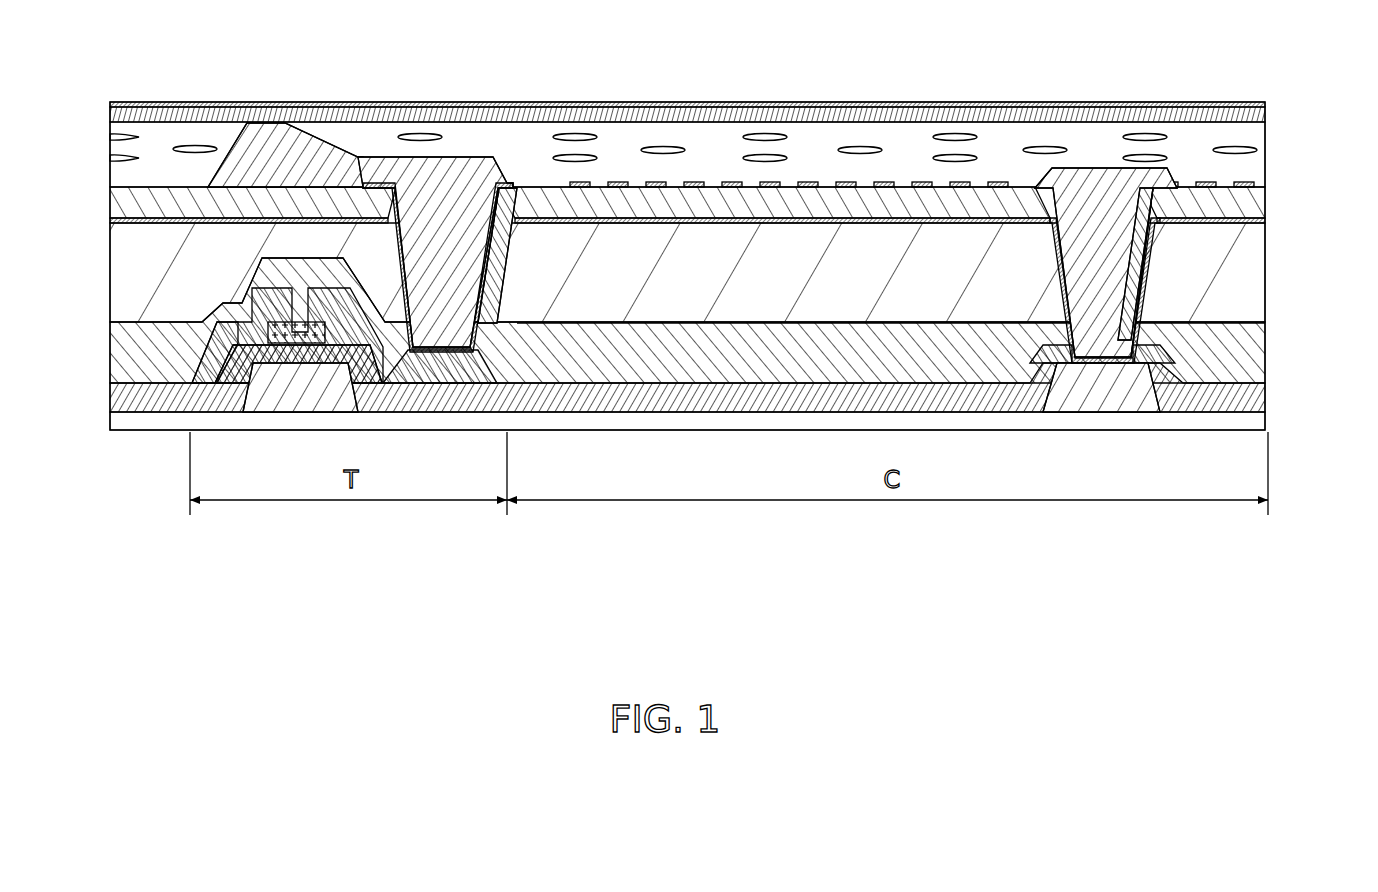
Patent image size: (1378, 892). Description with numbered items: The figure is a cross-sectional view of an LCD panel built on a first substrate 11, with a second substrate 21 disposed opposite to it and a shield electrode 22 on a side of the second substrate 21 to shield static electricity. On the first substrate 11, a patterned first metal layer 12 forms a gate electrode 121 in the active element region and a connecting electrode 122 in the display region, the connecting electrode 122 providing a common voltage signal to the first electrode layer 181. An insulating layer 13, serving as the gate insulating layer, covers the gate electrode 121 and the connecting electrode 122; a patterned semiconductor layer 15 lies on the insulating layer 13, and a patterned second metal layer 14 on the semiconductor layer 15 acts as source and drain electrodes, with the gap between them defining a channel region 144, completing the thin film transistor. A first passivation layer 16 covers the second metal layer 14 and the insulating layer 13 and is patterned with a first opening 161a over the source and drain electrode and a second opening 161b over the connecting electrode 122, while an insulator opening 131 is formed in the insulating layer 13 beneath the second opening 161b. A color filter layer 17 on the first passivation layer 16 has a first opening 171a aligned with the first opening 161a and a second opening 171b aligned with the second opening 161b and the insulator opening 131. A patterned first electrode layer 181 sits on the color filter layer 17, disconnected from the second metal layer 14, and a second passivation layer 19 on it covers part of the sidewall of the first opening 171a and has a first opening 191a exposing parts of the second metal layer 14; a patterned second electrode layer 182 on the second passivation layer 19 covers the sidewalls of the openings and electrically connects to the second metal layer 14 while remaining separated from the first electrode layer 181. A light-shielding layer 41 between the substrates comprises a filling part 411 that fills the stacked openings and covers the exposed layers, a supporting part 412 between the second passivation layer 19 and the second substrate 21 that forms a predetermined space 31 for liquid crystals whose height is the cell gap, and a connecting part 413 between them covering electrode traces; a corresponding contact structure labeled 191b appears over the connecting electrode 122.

The first substrate 11 is at (1257, 424).
The first metal layer 12 is at (701, 489).
The gate electrode 121 is at (298, 372).
The connecting electrode 122 is at (1101, 458).
The insulating layer 13 is at (1262, 393).
The insulator opening 131 is at (1258, 326).
The second metal layer 14 is at (205, 365).
The channel region 144 is at (296, 297).
The semiconductor layer 15 is at (216, 328).
The first passivation layer 16 is at (1258, 356).
The first opening of the first passivation layer 161a is at (440, 352).
The second opening of the first passivation layer 161b is at (1075, 364).
The color filter layer 17 is at (1240, 293).
The first opening of the color filter layer 171a is at (508, 198).
The second opening of the color filter layer 171b is at (1153, 257).
The first electrode layer 181 is at (1268, 222).
The second electrode layer 182 is at (1252, 186).
The second passivation layer 19 is at (1250, 205).
The first opening of the second passivation layer 191a is at (460, 208).
The second via liner 191b is at (1120, 190).
The second substrate 21 is at (1268, 116).
The shield electrode 22 is at (1268, 103).
The predetermined space 31 is at (1252, 156).
The light-shielding layer 41 is at (679, 210).
The filling part 411 is at (415, 195).
The supporting part 412 is at (290, 138).
The connecting part 413 is at (372, 170).